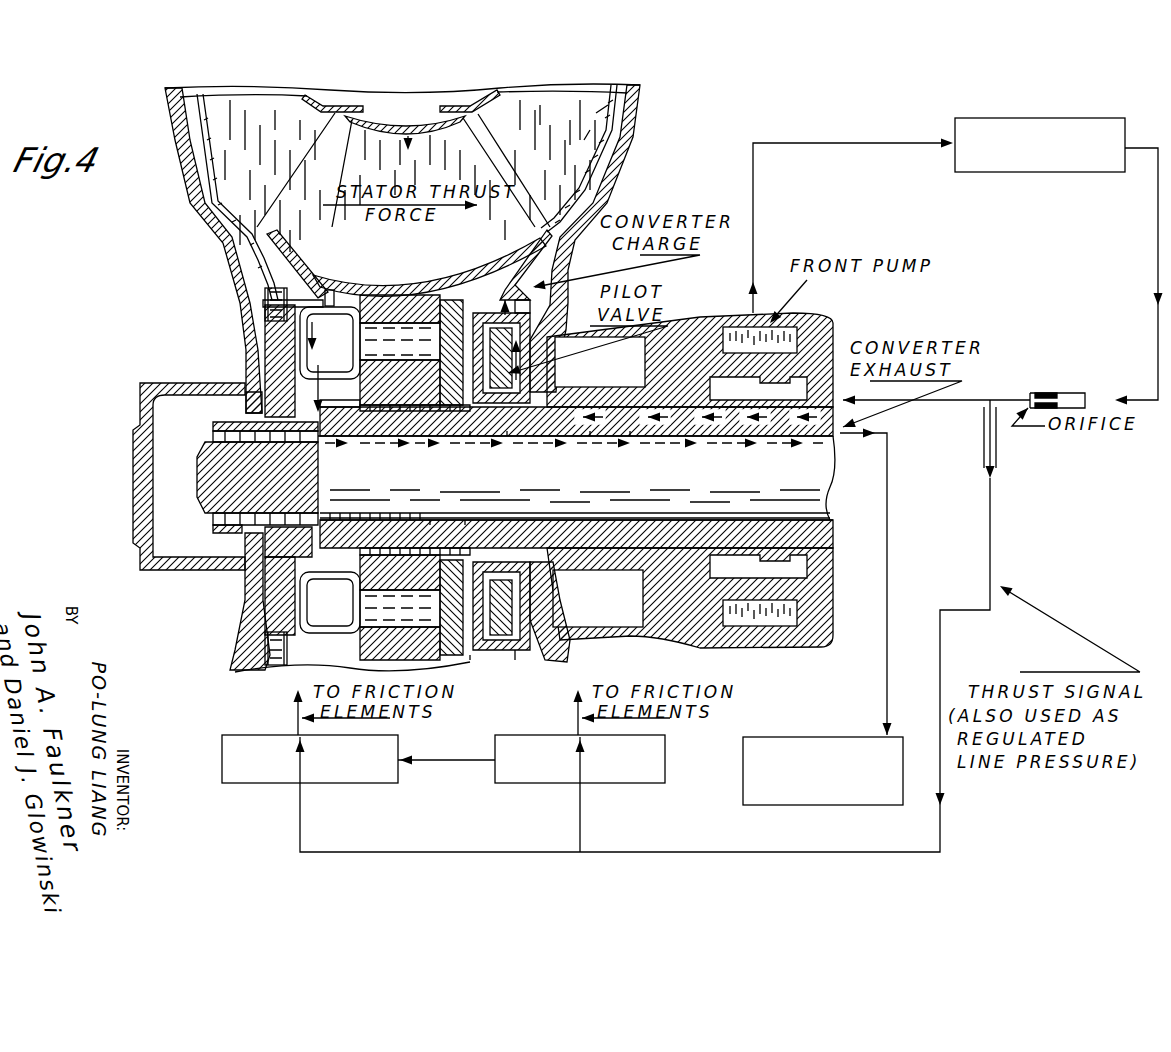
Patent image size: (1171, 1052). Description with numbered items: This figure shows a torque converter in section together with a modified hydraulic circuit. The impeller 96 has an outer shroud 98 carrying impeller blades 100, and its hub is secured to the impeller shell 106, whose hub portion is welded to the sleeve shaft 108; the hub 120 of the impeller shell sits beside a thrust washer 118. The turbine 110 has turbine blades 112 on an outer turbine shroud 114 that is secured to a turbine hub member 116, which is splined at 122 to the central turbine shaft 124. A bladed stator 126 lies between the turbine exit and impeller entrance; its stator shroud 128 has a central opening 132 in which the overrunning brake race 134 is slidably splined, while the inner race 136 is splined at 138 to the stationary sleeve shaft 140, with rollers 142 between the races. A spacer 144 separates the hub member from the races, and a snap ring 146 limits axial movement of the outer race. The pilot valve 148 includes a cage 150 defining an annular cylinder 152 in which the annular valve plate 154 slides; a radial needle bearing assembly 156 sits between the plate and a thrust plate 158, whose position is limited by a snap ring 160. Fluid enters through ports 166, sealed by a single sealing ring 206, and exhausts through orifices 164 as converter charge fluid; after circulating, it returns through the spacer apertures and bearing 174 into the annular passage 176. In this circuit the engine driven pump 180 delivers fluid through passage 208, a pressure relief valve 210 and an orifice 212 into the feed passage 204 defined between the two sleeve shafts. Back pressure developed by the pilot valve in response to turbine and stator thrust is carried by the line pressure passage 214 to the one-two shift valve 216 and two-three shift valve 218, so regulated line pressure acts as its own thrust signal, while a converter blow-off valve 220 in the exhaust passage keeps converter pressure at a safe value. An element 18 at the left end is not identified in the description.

The transmission housing 18 is at (142, 400).
The torque converter impeller 96 is at (625, 102).
The outer shroud 98 is at (612, 142).
The impeller blades 100 is at (600, 122).
The impeller shell 106 is at (625, 168).
The sleeve shaft 108 is at (637, 537).
The turbine 110 is at (205, 100).
The turbine blades 112 is at (212, 122).
The outer turbine shroud 114 is at (190, 205).
The turbine hub member 116 is at (250, 338).
The thrust washer 118 is at (262, 372).
The hub of the impeller shell 120 is at (250, 355).
The spline 122 is at (230, 437).
The central turbine shaft 124 is at (572, 557).
The bladed stator 126 is at (401, 120).
The stator shroud 128 is at (418, 300).
The central opening 132 is at (380, 290).
The overrunning brake race 134 is at (437, 302).
The overrunning brake inner race 136 is at (420, 540).
The spline 138 is at (380, 436).
The stationary sleeve shaft 140 is at (590, 423).
The overrunning brake rollers 142 is at (358, 300).
The spacer 144 is at (318, 305).
The snap ring 146 is at (305, 290).
The pilot valve 148 is at (530, 653).
The cage 150 is at (527, 612).
The annular cylinder 152 is at (547, 620).
The annular valve ring or plate 154 is at (512, 663).
The radial needle bearing assembly 156 is at (460, 540).
The thrust plate 158 is at (470, 677).
The snap ring 160 is at (492, 300).
The orifices 164 is at (512, 292).
The ports 166 is at (507, 410).
The bearing 174 is at (405, 437).
The annular passage 176 is at (888, 568).
The engine driven pump 180 is at (790, 337).
The fluid feed passage 204 is at (630, 413).
The sealing ring 206 is at (490, 416).
The passage 208 is at (870, 140).
The pressure relief valve 210 is at (1100, 104).
The orifice 212 is at (1045, 392).
The line pressure passage 214 is at (942, 648).
The one-two shift valve 216 is at (620, 783).
The two-three shift valve 218 is at (363, 783).
The converter blow-off or check valve 220 is at (848, 805).